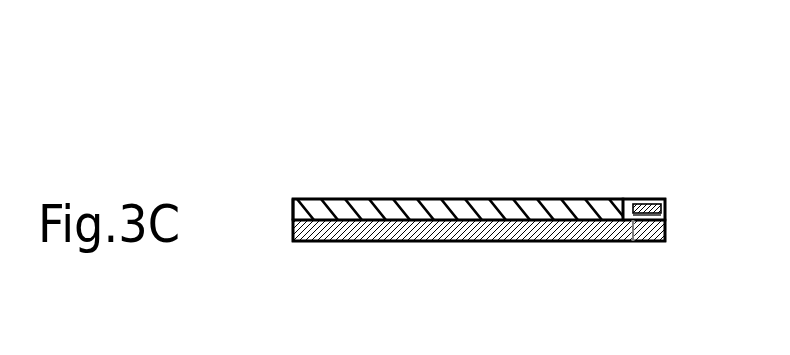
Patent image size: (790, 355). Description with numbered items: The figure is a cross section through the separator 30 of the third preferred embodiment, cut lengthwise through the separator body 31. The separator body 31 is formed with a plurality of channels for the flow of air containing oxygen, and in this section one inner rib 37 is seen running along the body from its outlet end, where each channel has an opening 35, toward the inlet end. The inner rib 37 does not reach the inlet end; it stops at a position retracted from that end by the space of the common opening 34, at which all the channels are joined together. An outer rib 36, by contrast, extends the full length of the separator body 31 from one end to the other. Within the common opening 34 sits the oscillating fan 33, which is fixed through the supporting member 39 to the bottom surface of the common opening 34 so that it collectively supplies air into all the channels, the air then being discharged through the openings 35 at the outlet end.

The separator 30 is at (295, 132).
The separator body 31 is at (350, 241).
The oscillating fan 33 is at (665, 207).
The common opening 34 is at (633, 241).
The opening 35 is at (293, 209).
The outer rib 36 is at (642, 203).
The inner rib 37 is at (510, 210).
The supporting member 39 is at (661, 214).